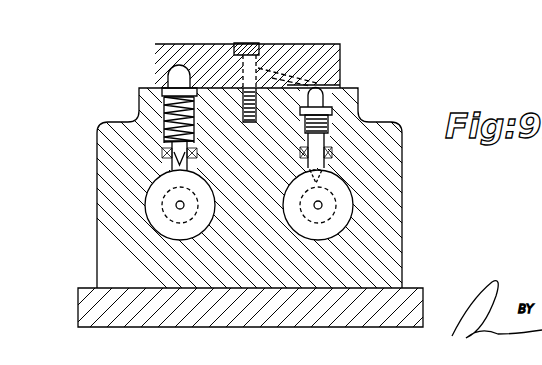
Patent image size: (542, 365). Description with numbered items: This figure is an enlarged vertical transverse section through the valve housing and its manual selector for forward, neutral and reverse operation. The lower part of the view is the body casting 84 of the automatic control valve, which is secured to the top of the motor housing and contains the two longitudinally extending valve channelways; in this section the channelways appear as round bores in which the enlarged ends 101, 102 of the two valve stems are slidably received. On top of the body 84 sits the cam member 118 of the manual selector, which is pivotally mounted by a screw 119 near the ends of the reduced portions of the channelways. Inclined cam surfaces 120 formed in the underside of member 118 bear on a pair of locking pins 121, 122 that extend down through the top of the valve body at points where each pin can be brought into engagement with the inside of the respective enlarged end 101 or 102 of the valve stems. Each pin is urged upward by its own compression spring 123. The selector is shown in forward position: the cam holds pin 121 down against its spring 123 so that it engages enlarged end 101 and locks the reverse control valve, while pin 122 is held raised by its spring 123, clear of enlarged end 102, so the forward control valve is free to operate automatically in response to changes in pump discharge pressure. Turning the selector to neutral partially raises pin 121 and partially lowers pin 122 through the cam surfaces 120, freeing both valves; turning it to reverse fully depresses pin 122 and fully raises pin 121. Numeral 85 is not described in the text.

The body casting 84 is at (383, 242).
The body block 85 is at (88, 155).
The enlarged end of valve stem 101 is at (342, 203).
The enlarged end of valve stem 102 is at (160, 202).
The cam member 118 is at (327, 57).
The screw 119 is at (250, 44).
The inclined cam surfaces 120 is at (192, 63).
The locking pin 121 is at (317, 100).
The locking pin 122 is at (179, 72).
The compression spring 123 is at (163, 113).